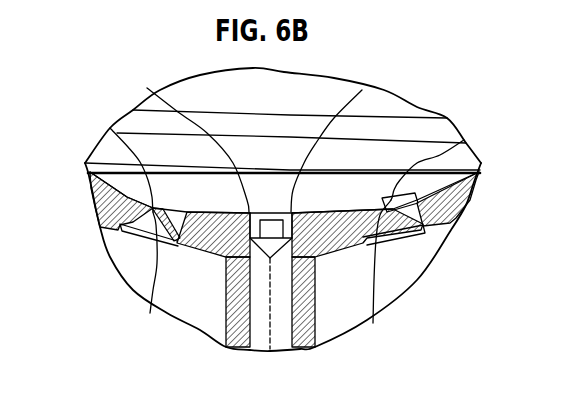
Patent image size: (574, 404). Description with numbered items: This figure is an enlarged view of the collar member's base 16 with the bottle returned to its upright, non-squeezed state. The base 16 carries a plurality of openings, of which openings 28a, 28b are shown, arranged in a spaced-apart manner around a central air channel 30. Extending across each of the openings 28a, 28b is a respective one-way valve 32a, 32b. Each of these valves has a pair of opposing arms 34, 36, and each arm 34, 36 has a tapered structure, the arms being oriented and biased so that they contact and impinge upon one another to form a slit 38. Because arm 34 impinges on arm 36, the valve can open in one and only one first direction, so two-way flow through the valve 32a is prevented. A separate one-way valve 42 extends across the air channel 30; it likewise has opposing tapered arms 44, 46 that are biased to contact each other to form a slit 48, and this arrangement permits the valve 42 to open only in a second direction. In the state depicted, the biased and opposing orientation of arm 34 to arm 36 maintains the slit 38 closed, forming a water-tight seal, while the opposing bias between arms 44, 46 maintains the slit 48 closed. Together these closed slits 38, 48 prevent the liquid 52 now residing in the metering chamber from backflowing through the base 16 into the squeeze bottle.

The base 16 is at (472, 190).
The opening 28a is at (399, 273).
The opening 28b is at (102, 268).
The air channel 30 is at (288, 349).
The one-way valve 32a is at (422, 247).
The one-way valve 32b is at (142, 257).
The arm 34 is at (150, 313).
The arm 36 is at (117, 235).
The slit 38 is at (116, 135).
The one-way valve 42 is at (262, 333).
The arm 44 is at (362, 90).
The arm 46 is at (173, 111).
The slit 48 is at (272, 337).
The liquid 52 is at (424, 110).